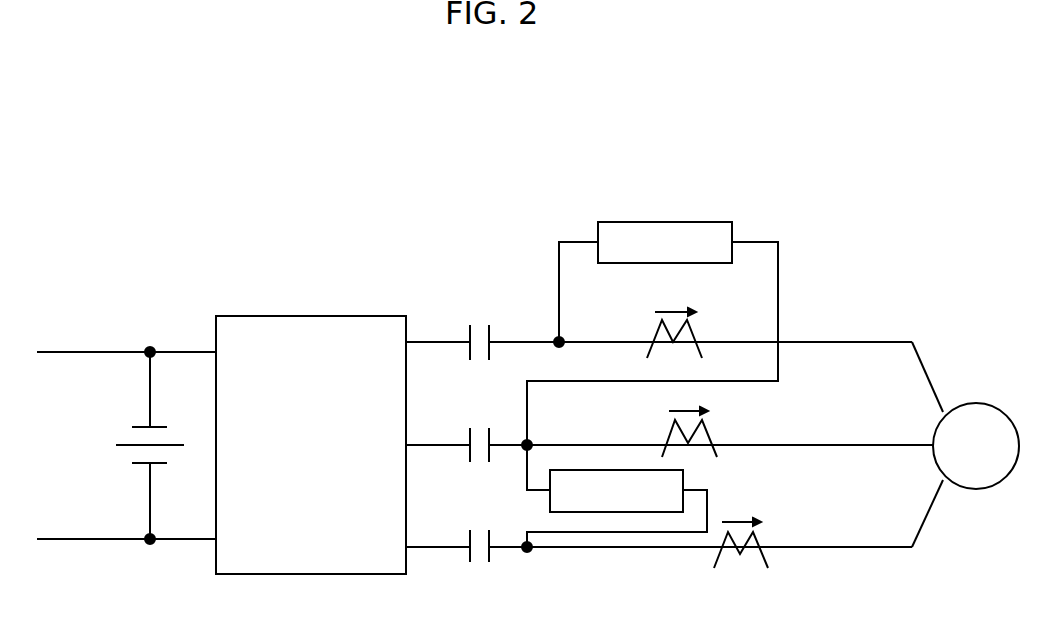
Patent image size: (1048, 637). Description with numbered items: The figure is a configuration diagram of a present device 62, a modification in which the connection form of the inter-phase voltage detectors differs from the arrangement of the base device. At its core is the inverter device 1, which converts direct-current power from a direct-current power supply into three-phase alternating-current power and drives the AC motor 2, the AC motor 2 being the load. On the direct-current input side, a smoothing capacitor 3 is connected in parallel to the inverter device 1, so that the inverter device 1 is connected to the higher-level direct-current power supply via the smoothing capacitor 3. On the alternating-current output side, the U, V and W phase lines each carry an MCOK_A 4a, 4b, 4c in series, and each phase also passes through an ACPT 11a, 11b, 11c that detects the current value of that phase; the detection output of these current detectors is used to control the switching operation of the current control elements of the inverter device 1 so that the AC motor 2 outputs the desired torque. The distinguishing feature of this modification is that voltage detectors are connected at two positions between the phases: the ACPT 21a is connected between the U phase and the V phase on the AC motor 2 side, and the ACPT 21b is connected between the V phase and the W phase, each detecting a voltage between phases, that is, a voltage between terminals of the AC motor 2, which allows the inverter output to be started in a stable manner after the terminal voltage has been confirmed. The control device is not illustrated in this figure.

The present device 62 is at (502, 153).
The smoothing capacitor 3 is at (108, 443).
The inverter device 1 is at (317, 455).
The MCOK_A 4a is at (468, 360).
The MCOK_A 4b is at (468, 462).
The MCOK_A 4c is at (468, 562).
The ACPT (voltage detector) 21a is at (720, 252).
The ACPT (voltage detector) 21b is at (672, 501).
The ACPT 11a is at (700, 326).
The ACPT 11b is at (716, 434).
The ACPT 11c is at (762, 528).
The AC motor 2 is at (982, 456).